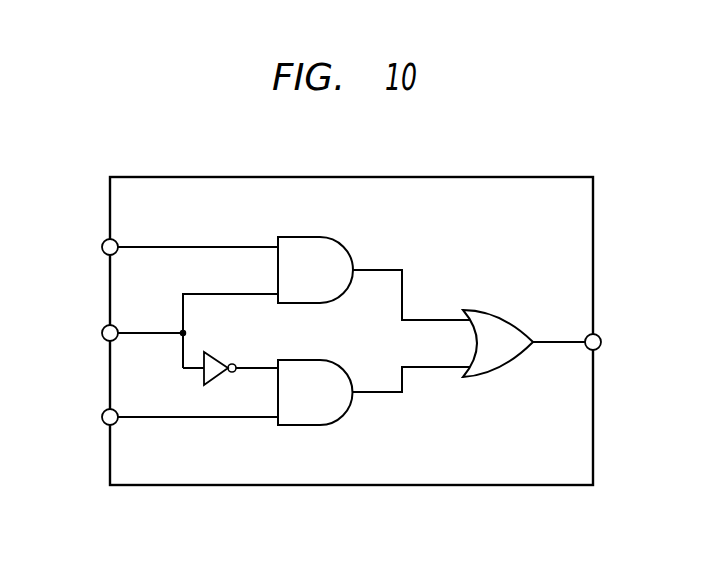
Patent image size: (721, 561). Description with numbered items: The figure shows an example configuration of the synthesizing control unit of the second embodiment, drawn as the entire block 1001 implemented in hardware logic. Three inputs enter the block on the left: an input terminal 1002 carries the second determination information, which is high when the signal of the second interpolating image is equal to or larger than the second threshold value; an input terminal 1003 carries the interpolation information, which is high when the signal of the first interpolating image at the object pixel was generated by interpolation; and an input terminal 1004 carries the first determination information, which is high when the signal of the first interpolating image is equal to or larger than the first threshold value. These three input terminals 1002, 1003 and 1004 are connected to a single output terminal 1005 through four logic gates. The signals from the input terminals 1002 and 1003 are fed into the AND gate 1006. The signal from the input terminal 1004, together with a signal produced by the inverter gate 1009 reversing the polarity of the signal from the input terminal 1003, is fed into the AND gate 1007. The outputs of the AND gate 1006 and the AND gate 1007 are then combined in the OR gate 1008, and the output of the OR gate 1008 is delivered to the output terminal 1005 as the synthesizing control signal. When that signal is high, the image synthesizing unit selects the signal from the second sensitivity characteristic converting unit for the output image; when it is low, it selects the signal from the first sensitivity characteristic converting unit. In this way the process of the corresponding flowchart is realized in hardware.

The entire block of synthesizing control unit 1001 is at (383, 176).
The input terminal 1002 is at (101, 247).
The input terminal 1003 is at (101, 333).
The input terminal 1004 is at (101, 417).
The output terminal 1005 is at (601, 342).
The AND gate 1006 is at (305, 236).
The AND gate 1007 is at (305, 359).
The OR gate 1008 is at (490, 311).
The inverter gate 1009 is at (215, 353).